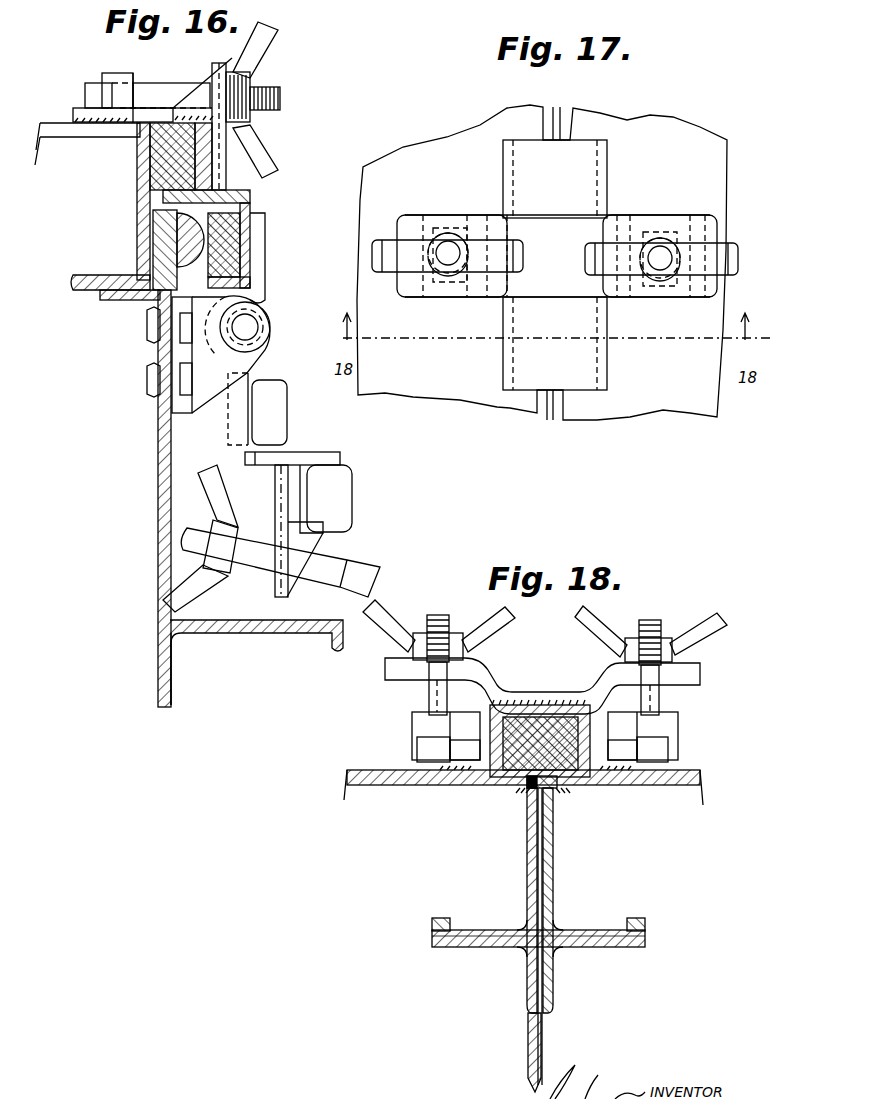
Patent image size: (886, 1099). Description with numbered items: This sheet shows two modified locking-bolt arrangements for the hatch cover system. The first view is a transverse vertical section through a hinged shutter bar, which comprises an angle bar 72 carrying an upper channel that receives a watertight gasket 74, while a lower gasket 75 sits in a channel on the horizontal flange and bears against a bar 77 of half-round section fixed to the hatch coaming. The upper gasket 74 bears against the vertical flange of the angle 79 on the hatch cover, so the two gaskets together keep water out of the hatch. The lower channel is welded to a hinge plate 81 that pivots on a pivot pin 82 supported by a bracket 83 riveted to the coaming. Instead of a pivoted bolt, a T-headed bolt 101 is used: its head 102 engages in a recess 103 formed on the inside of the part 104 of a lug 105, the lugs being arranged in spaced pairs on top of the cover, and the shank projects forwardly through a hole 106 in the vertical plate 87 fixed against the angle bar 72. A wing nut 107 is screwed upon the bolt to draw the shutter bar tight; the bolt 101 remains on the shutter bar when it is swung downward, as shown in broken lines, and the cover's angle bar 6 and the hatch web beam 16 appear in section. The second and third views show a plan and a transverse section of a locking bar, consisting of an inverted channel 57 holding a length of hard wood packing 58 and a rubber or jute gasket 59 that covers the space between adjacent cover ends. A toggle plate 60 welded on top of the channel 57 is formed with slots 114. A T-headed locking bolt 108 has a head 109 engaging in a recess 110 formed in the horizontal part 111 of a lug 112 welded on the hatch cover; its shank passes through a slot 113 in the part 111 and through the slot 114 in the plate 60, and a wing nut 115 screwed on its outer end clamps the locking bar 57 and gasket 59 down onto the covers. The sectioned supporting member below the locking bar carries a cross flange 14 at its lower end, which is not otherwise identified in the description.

In FIG. 16, the T-headed bolt 101 is at (157, 95).
In FIG. 16, the head 102 is at (90, 104).
In FIG. 16, the recess 103 is at (103, 80).
In FIG. 16, the part 104 is at (121, 76).
In FIG. 16, the lug 105 is at (118, 116).
In FIG. 16, the hole 106 is at (250, 82).
In FIG. 16, the wing nut 107 is at (265, 37).
In FIG. 16, the vertical plate 87 is at (222, 160).
In FIG. 16, the angle bar 72 is at (215, 187).
In FIG. 16, the upper gasket 74 is at (160, 178).
In FIG. 16, the vertical side and end angle flange 79 is at (140, 220).
In FIG. 16, the hinge plate 81 is at (258, 243).
In FIG. 16, the lower gasket 75 is at (232, 260).
In FIG. 16, the half-round bar 77 is at (158, 292).
In FIG. 16, the pivot pin 82 is at (252, 327).
In FIG. 16, the bracket 83 is at (205, 372).
In FIG. 17, the horizontal part 111 is at (440, 222).
In FIG. 18, the horizontal part 111 is at (417, 743).
In FIG. 17, the slot 114 is at (447, 238).
In FIG. 17, the wing nut 115 is at (400, 258).
In FIG. 18, the wing nut 115 is at (588, 632).
In FIG. 17, the head 109 is at (452, 270).
In FIG. 18, the head 109 is at (433, 747).
In FIG. 17, the inverted channel 57 is at (530, 385).
In FIG. 18, the inverted channel 57 is at (603, 748).
In FIG. 18, the T-headed locking bolt 108 is at (440, 620).
In FIG. 18, the slot 113 is at (455, 730).
In FIG. 18, the toggle plate 60 is at (518, 702).
In FIG. 18, the hard wood packing 58 is at (573, 716).
In FIG. 18, the recess 110 is at (433, 733).
In FIG. 18, the lug 112 is at (467, 757).
In FIG. 18, the gasket 59 is at (520, 780).
In FIG. 18, the angle bar 6 is at (530, 846).
In FIG. 18, the cross flange 14 is at (468, 930).
In FIG. 18, the hatch web beam 16 is at (535, 1045).